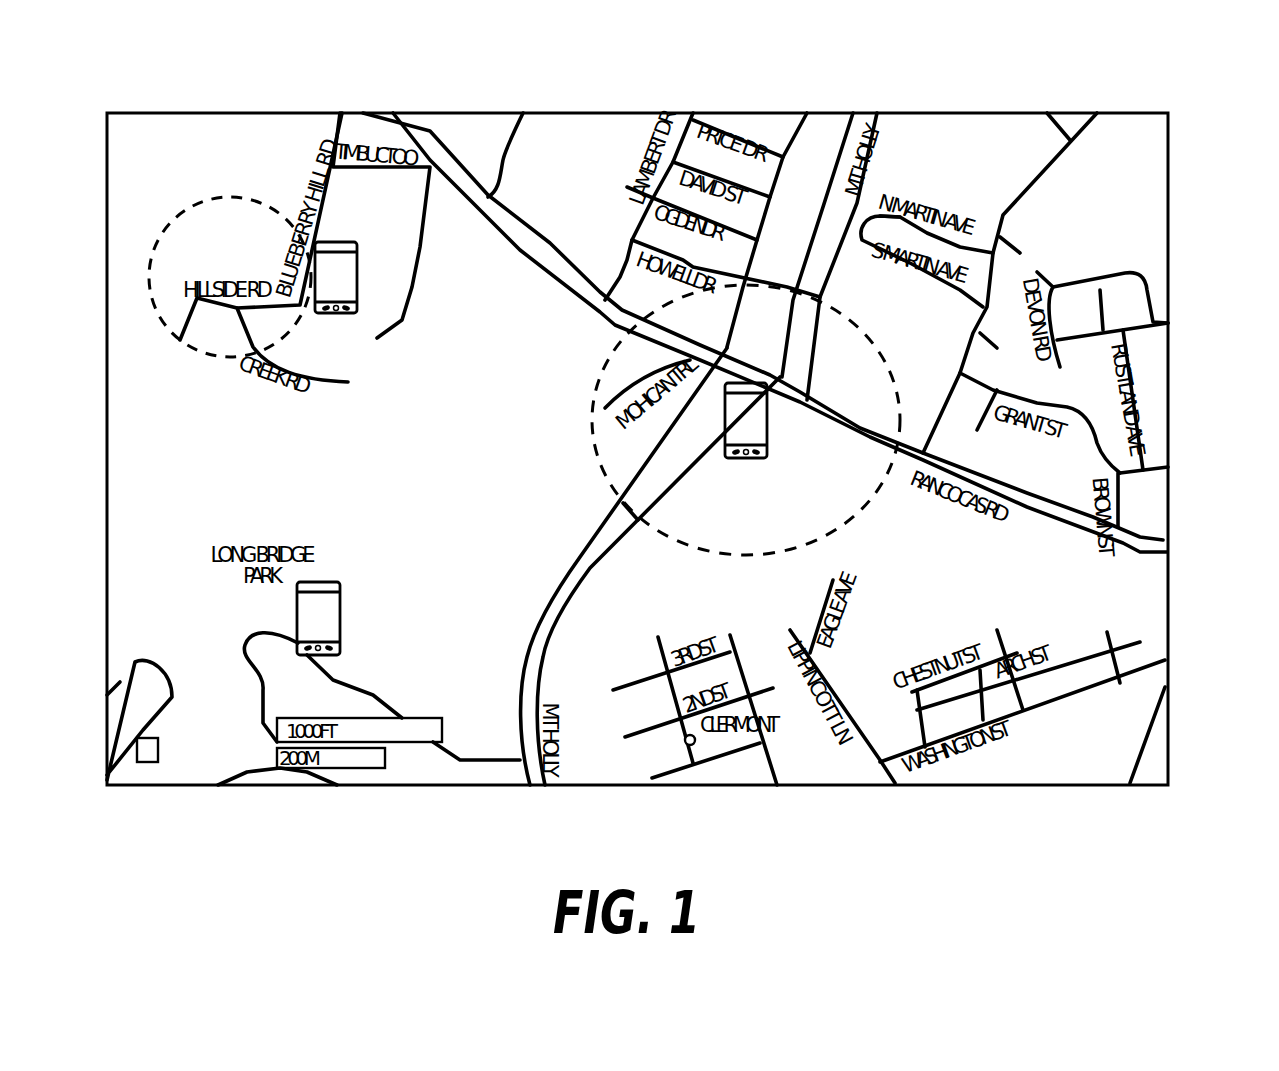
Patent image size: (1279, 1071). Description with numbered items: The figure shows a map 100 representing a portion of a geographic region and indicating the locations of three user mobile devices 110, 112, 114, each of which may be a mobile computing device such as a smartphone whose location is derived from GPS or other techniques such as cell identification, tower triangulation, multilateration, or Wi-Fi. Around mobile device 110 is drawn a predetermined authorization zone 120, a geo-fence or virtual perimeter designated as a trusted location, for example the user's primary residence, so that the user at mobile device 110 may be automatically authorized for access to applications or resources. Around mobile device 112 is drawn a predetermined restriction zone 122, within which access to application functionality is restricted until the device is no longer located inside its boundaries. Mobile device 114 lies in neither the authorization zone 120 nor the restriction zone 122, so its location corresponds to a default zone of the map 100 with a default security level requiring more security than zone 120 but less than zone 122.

The map 100 is at (1215, 125).
The mobile device 110 is at (357, 295).
The mobile device 112 is at (767, 427).
The mobile device 114 is at (340, 602).
The predetermined authorization zone 120 is at (408, 243).
The predetermined restriction zone 122 is at (865, 333).